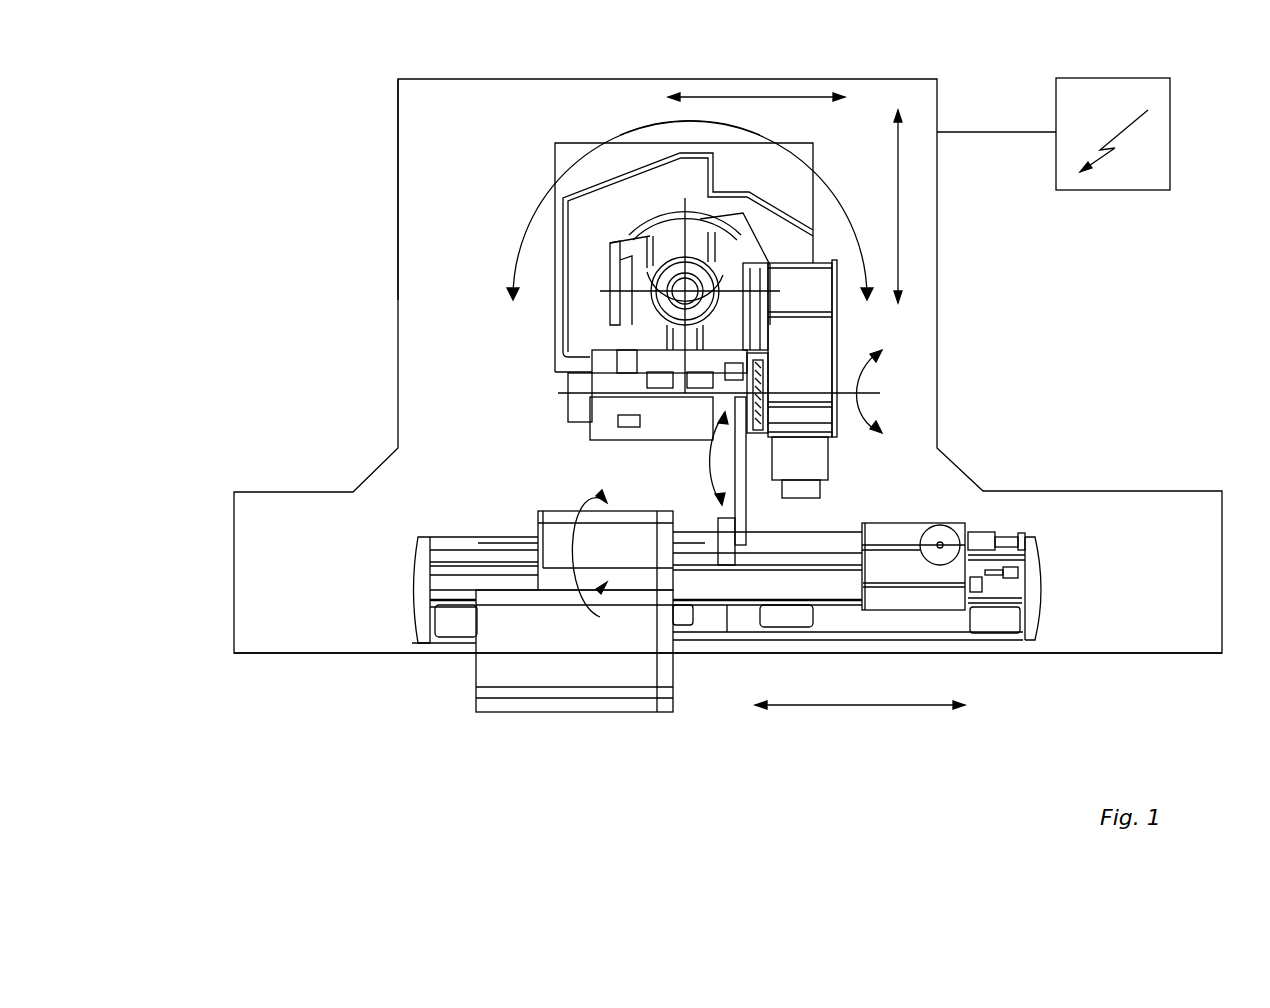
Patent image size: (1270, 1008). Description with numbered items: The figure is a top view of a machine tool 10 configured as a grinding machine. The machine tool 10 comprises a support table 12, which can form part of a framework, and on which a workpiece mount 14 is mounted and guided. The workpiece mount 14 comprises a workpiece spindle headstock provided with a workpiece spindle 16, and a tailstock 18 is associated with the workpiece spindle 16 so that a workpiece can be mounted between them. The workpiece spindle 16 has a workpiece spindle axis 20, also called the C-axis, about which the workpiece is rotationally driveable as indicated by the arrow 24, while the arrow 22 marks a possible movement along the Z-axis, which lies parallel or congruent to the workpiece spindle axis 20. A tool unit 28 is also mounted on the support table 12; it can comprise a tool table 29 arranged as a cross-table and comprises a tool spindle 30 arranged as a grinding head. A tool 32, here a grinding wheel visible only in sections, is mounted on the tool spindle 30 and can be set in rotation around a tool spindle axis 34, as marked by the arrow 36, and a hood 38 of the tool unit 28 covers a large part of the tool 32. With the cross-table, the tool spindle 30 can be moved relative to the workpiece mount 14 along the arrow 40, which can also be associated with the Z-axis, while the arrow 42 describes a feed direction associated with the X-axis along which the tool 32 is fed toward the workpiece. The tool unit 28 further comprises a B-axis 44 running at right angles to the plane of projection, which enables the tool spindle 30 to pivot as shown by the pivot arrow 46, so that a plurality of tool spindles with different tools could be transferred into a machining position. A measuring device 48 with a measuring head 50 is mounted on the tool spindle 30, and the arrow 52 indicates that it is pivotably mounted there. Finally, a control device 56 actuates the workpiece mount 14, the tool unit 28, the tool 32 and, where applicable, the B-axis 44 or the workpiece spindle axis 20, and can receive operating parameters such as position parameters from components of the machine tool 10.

The machine tool 10 is at (210, 260).
The support table 12 is at (412, 398).
The workpiece mount 14 is at (525, 793).
The workpiece spindle 16 is at (552, 515).
The tailstock 18 is at (937, 597).
The workpiece spindle axis 20 is at (562, 543).
The arrow 22 is at (865, 712).
The arrow 24 is at (582, 612).
The tool unit 28 is at (510, 177).
The tool table 29 is at (783, 198).
The tool spindle 30 is at (600, 367).
The tool 32 is at (812, 497).
The tool spindle axis 34 is at (570, 393).
The arrow 36 is at (857, 382).
The hood 38 is at (802, 350).
The arrow 40 is at (765, 97).
The arrow 42 is at (898, 130).
The B-axis 44 is at (667, 257).
The pivot arrow 46 is at (620, 136).
The measuring device 48 is at (740, 483).
The measuring head 50 is at (725, 547).
The arrow 52 is at (713, 462).
The control device 56 is at (1170, 135).